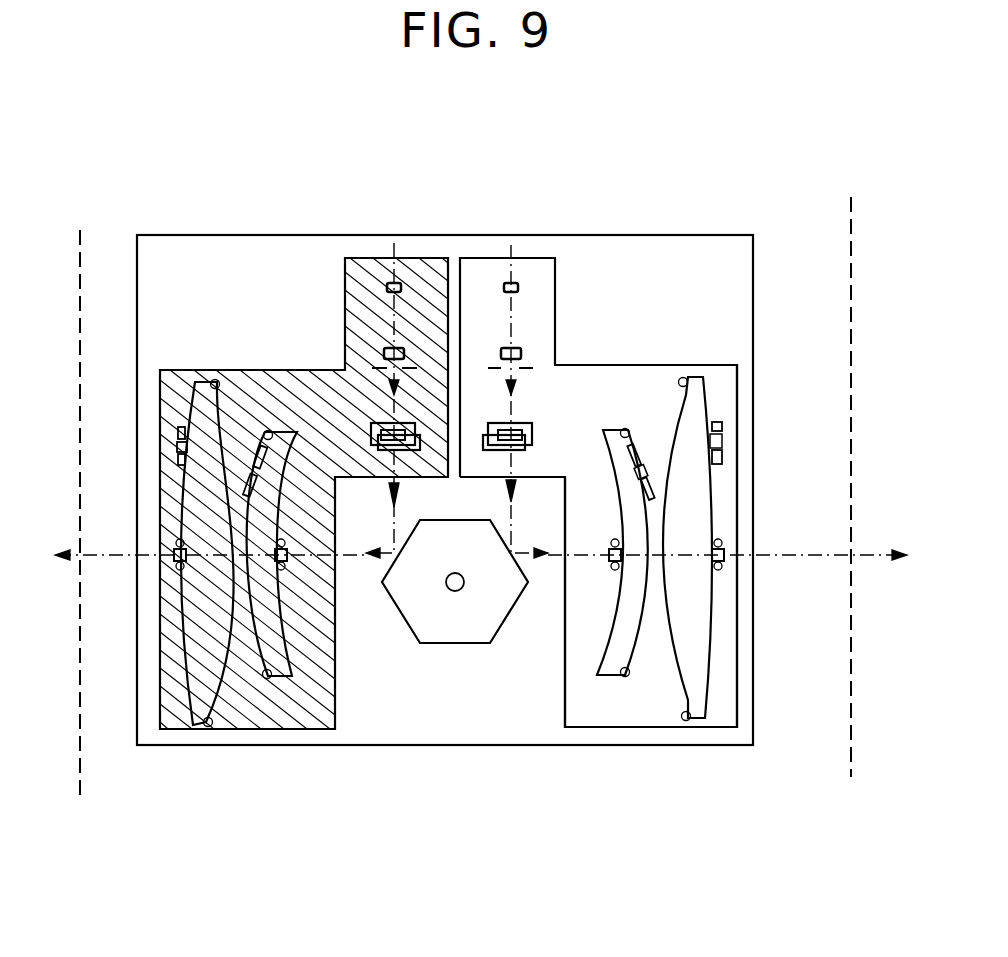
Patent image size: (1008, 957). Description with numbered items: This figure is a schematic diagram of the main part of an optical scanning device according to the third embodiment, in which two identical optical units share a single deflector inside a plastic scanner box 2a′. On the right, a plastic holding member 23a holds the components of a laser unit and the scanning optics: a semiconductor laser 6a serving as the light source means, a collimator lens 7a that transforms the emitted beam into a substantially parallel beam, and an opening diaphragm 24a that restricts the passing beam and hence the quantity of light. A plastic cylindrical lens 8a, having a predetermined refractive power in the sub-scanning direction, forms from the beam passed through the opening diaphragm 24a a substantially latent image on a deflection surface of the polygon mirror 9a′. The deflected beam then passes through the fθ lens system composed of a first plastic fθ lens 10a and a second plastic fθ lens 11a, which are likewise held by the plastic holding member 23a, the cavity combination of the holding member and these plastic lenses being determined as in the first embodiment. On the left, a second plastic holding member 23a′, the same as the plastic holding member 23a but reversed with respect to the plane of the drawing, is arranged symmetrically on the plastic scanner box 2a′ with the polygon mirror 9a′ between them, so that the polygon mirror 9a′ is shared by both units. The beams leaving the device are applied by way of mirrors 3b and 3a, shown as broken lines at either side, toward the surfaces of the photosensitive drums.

The plastic scanner box 2a′ is at (732, 252).
The mirror 3a is at (853, 246).
The mirror 3b is at (82, 250).
The semiconductor laser 6a is at (518, 280).
The collimator lens 7a is at (525, 340).
The plastic cylindrical lens 8a is at (540, 413).
The polygon mirror 9a′ is at (477, 605).
The first plastic fθ lens 10a is at (613, 425).
The second plastic fθ lens 11a is at (707, 398).
The plastic holding member 23a is at (658, 377).
The plastic holding member 23a′ is at (191, 379).
The opening diaphragm 24a is at (492, 365).